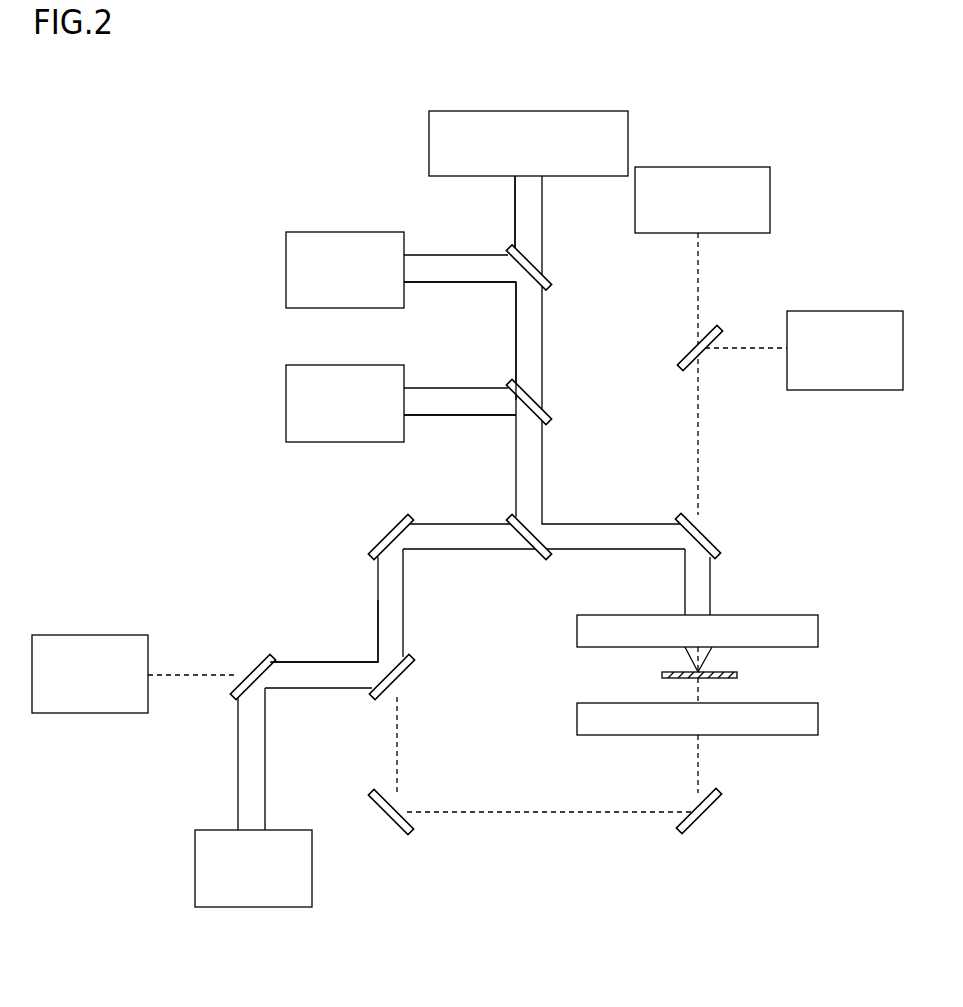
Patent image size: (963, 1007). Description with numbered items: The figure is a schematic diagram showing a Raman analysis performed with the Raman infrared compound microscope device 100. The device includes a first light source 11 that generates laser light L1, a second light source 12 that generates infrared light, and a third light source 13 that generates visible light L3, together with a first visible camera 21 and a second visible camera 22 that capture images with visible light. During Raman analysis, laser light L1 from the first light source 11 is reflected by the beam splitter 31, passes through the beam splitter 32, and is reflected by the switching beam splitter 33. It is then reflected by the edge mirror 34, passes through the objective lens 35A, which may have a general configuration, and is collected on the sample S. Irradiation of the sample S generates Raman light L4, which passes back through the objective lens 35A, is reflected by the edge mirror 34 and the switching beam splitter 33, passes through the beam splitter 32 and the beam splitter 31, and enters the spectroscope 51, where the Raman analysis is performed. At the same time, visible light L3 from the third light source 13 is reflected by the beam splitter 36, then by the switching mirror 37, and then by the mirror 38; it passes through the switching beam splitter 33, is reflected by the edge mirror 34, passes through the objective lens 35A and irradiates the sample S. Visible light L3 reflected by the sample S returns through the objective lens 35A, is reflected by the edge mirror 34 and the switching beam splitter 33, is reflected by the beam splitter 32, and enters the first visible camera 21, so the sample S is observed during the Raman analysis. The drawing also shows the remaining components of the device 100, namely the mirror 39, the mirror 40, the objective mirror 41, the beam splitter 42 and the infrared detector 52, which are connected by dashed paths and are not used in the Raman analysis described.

The Raman infrared compound microscope device 100 is at (801, 91).
The first light source 11 is at (288, 267).
The second light source 12 is at (108, 713).
The third light source 13 is at (262, 907).
The first visible camera 21 is at (290, 402).
The second visible camera 22 is at (860, 390).
The beam splitter 31 is at (548, 283).
The beam splitter 32 is at (548, 410).
The switching beam splitter 33 is at (543, 560).
The edge mirror 34 is at (718, 548).
The objective lens 35A is at (583, 634).
The beam splitter 36 is at (267, 657).
The switching mirror 37 is at (407, 658).
The mirror 38 is at (403, 518).
The mirror 39 is at (405, 833).
The mirror 40 is at (683, 831).
The objective mirror 41 is at (582, 718).
The beam splitter 42 is at (683, 357).
The spectroscope 51 is at (555, 111).
The infrared detector 52 is at (687, 167).
The sample S is at (663, 675).
The laser light L1 is at (467, 277).
The visible light L3 is at (457, 408).
The Raman light L4 is at (519, 209).